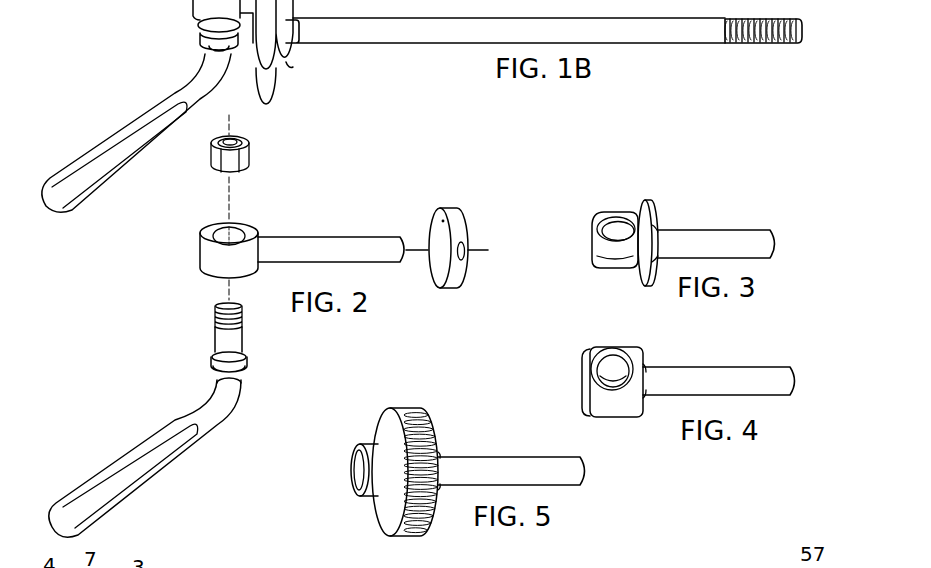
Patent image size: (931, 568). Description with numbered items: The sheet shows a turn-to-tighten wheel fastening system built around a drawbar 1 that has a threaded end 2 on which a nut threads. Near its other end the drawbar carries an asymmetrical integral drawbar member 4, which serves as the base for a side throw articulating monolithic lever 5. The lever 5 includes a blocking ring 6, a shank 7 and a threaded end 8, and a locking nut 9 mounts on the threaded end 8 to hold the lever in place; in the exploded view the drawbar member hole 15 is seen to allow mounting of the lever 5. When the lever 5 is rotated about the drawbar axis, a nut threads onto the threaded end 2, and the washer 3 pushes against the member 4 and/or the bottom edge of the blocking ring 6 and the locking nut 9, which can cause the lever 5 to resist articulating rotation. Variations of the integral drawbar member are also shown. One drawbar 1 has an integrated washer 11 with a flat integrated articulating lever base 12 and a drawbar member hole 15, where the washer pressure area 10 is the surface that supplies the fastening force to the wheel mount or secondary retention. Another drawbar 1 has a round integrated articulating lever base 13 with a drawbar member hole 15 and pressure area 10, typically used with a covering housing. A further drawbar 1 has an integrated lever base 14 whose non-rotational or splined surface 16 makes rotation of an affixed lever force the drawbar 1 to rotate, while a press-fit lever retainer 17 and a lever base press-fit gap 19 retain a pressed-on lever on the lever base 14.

In FIG. 1B, the drawbar 1 is at (386, 30).
In FIG. 2, the drawbar 1 is at (312, 246).
In FIG. 3, the drawbar 1 is at (715, 243).
In FIG. 4, the drawbar 1 is at (732, 377).
In FIG. 5, the drawbar 1 is at (500, 468).
In FIG. 1B, the threaded end 2 is at (785, 45).
In FIG. 1B, the washer 3 is at (270, 55).
In FIG. 2, the washer 3 is at (444, 276).
In FIG. 1B, the asymmetrical integral drawbar member 4 is at (207, 14).
In FIG. 2, the asymmetrical integral drawbar member 4 is at (218, 268).
In FIG. 1B, the side throw articulating monolithic lever 5 is at (195, 95).
In FIG. 2, the side throw articulating monolithic lever 5 is at (207, 415).
In FIG. 1B, the blocking ring 6 is at (238, 46).
In FIG. 2, the blocking ring 6 is at (244, 357).
In FIG. 2, the shank 7 is at (225, 343).
In FIG. 2, the threaded end 8 is at (218, 313).
In FIG. 2, the locking nut 9 is at (248, 170).
In FIG. 3, the washer pressure area 10 is at (657, 222).
In FIG. 4, the washer pressure area 10 is at (647, 358).
In FIG. 5, the washer pressure area 10 is at (437, 438).
In FIG. 3, the integrated washer 11 is at (655, 196).
In FIG. 3, the flat integrated articulating lever base 12 is at (627, 218).
In FIG. 4, the round integrated articulating lever base 13 is at (635, 348).
In FIG. 5, the integrated lever base 14 is at (387, 435).
In FIG. 2, the drawbar member hole 15 is at (224, 236).
In FIG. 3, the drawbar member hole 15 is at (608, 233).
In FIG. 4, the drawbar member hole 15 is at (608, 370).
In FIG. 5, the lever base non-rotational or splined surface 16 is at (417, 518).
In FIG. 5, the press-fit lever retainer 17 is at (367, 442).
In FIG. 5, the lever base press-fit gap 19 is at (377, 502).